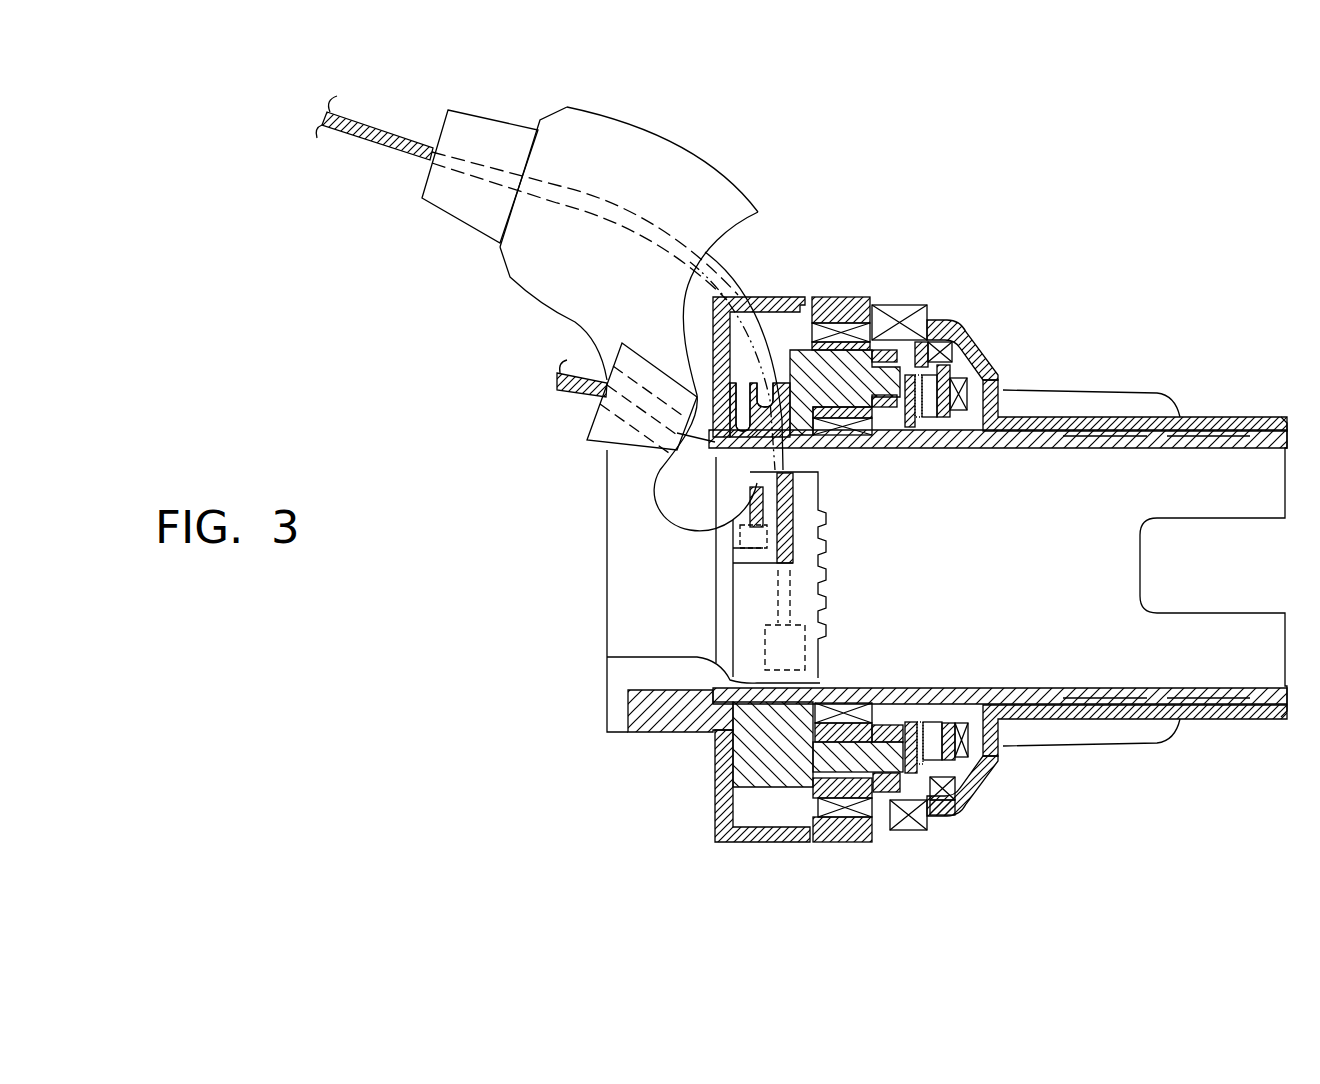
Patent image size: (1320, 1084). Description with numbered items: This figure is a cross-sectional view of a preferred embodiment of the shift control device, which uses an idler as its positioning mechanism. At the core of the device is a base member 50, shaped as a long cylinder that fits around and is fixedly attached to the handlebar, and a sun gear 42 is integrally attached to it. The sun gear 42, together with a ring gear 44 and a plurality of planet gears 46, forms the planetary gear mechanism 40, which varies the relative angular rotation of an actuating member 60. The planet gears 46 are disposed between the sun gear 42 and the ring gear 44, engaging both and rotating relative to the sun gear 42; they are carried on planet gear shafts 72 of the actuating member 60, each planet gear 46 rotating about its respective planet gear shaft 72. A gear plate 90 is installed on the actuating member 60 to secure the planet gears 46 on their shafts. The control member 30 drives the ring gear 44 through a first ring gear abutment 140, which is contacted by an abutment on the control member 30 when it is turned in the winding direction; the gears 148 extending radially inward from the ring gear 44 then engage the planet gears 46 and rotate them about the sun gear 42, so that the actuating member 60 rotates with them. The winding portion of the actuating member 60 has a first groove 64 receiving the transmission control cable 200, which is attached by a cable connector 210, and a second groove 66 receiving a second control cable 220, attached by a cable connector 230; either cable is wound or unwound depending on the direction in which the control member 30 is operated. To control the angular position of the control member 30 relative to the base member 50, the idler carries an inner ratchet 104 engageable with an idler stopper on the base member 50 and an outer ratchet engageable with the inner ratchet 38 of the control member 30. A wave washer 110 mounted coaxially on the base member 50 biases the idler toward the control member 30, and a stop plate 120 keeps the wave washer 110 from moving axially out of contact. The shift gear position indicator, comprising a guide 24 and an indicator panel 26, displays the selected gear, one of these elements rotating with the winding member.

The guide 24 is at (795, 845).
The indicator panel 26 is at (847, 842).
The control member 30 is at (1228, 418).
The inner ratchet 38 is at (946, 328).
The planetary gear mechanism 40 is at (821, 260).
The sun gear 42 is at (852, 430).
The ring gear 44 is at (877, 832).
The planet gears 46 is at (813, 790).
The base member 50 is at (1110, 444).
The actuating member 60 is at (751, 736).
The first groove 64 is at (781, 365).
The second groove 66 is at (746, 385).
The planet gear shafts 72 is at (833, 748).
The gear plate 90 is at (905, 832).
The inner ratchet 104 is at (973, 377).
The wave washer 110 is at (975, 762).
The stop plate 120 is at (970, 807).
The first ring gear abutment 140 is at (900, 303).
The gears 148 is at (847, 297).
The transmission control cable 200 is at (578, 214).
The cable connector 210 is at (782, 656).
The second control cable 220 is at (578, 384).
The cable connector 230 is at (757, 542).